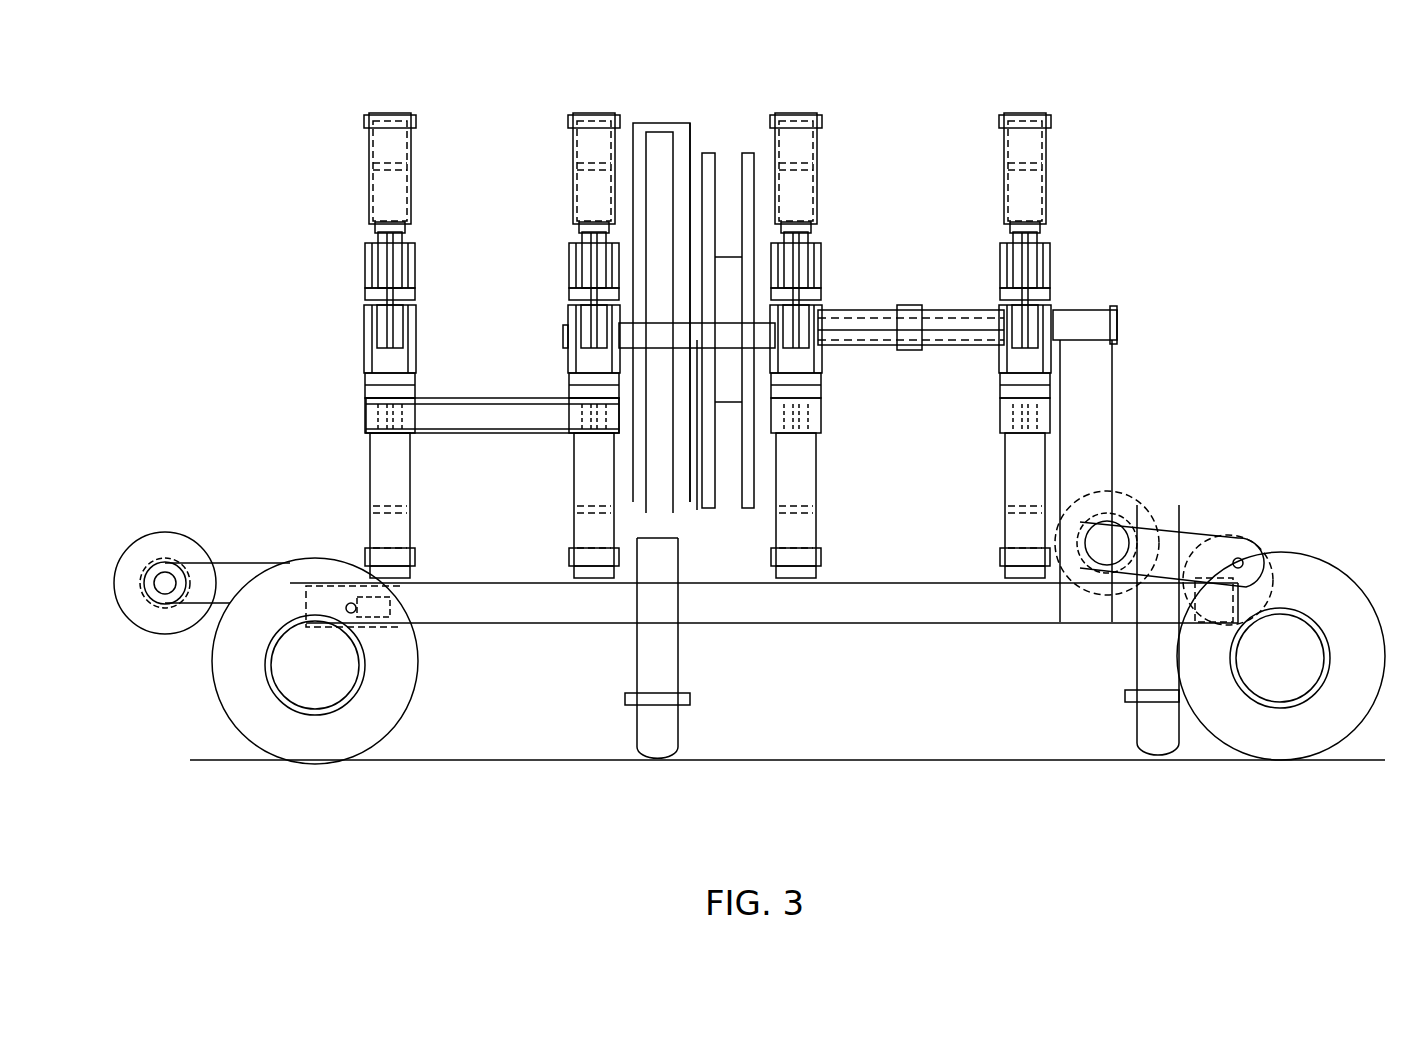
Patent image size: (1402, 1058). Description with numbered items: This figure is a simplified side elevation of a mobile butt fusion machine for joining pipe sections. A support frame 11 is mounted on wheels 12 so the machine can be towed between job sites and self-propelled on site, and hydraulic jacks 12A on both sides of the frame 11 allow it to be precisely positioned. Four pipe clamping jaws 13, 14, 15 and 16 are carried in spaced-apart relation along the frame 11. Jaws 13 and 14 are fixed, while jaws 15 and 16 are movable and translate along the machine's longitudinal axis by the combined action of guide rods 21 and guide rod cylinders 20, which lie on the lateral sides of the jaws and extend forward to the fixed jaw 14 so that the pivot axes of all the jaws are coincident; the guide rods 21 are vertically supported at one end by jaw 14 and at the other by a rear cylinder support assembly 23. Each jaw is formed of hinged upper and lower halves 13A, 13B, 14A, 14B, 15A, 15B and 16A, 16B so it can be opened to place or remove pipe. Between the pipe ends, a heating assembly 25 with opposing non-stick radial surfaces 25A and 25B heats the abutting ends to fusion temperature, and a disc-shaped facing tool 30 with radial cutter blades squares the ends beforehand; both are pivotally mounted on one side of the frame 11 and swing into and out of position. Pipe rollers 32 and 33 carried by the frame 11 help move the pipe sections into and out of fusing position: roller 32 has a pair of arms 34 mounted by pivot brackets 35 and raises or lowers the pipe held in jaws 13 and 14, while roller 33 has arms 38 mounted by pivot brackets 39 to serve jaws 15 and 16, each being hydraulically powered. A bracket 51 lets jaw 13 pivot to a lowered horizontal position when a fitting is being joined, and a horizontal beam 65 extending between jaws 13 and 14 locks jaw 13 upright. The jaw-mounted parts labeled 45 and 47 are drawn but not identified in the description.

The support frame 11 is at (855, 607).
The wheels 12 is at (380, 710).
The hydraulic jacks 12A is at (665, 725).
The pipe clamping jaw 13 is at (368, 143).
The upper half of jaw 13A is at (403, 192).
The lower half of jaw 13B is at (382, 452).
The pipe clamping jaw 14 is at (573, 150).
The upper half of jaw 14A is at (580, 185).
The lower half of jaw 14B is at (590, 488).
The pipe clamping jaw 15 is at (815, 183).
The upper half of jaw 15A is at (808, 188).
The lower half of jaw 15B is at (813, 538).
The pipe clamping jaw 16 is at (1048, 185).
The upper half of jaw 16A is at (1035, 148).
The lower half of jaw 16B is at (1012, 478).
The guide rod cylinders 20 is at (1055, 325).
The guide rods 21 is at (955, 342).
The rear cylinder support assembly 23 is at (1093, 410).
The heating assembly 25 is at (672, 138).
The non-stick radial surface 25A is at (634, 140).
The non-stick radial surface 25B is at (690, 150).
The facing tool 30 is at (742, 170).
The pipe roller 32 is at (150, 545).
The pipe roller 33 is at (1122, 505).
The arms 34 is at (225, 572).
The pivot brackets 35 is at (348, 602).
The arms 38 is at (1192, 540).
The pivot brackets 39 is at (1250, 548).
The upper bracket 45 is at (392, 262).
The lower bracket 47 is at (397, 325).
The bracket 51 is at (360, 598).
The beam 65 is at (532, 408).